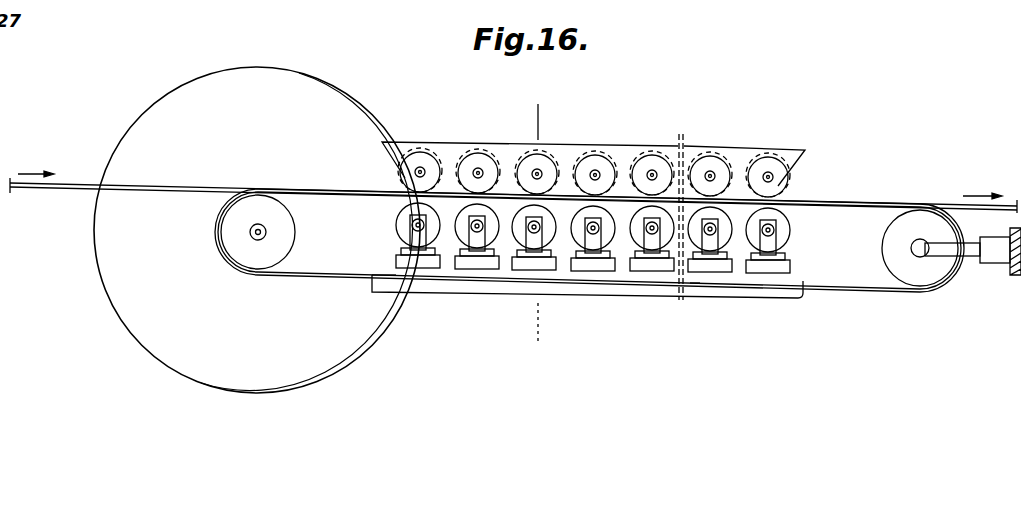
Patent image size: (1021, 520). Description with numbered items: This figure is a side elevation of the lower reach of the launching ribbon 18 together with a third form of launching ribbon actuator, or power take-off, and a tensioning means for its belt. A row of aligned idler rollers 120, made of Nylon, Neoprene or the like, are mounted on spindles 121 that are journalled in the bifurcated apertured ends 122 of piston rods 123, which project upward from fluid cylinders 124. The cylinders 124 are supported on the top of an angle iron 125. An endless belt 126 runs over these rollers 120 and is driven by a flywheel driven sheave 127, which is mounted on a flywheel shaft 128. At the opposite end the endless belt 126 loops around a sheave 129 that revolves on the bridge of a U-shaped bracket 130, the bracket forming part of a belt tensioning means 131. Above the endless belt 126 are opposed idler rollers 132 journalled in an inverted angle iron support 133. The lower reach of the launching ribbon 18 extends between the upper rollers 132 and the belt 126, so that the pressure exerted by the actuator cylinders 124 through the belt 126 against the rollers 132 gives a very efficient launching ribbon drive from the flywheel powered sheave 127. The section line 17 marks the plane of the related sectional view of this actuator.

The section line 17 is at (548, 114).
The launching ribbon 18 is at (882, 205).
The idler rollers 120 is at (791, 232).
The spindles 121 is at (712, 236).
The bifurcated apertured ends 122 is at (668, 266).
The piston rods 123 is at (699, 284).
The fluid cylinders 124 is at (504, 264).
The angle iron 125 is at (793, 292).
The endless belt 126 is at (874, 287).
The flywheel driven sheave 127 is at (221, 230).
The flywheel shaft 128 is at (252, 241).
The sheave 129 is at (931, 276).
The U-shaped bracket 130 is at (412, 233).
The belt tensioning means 131 is at (990, 236).
The opposed idler rollers 132 is at (510, 172).
The inverted angle iron support 133 is at (618, 142).